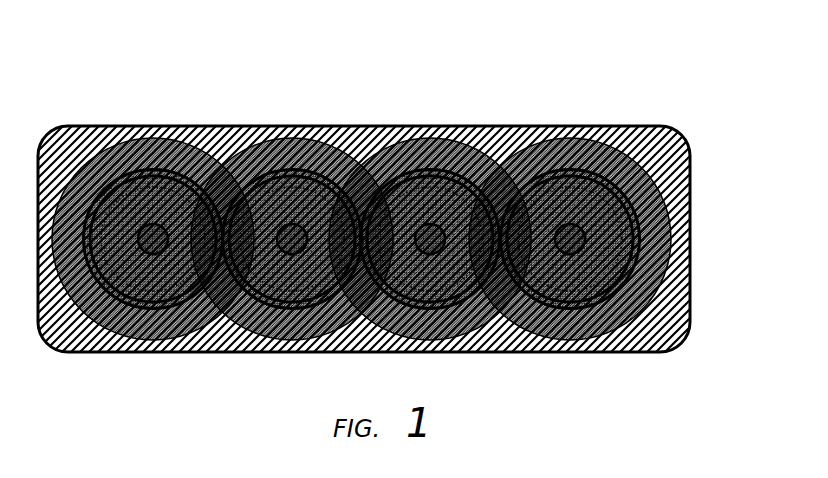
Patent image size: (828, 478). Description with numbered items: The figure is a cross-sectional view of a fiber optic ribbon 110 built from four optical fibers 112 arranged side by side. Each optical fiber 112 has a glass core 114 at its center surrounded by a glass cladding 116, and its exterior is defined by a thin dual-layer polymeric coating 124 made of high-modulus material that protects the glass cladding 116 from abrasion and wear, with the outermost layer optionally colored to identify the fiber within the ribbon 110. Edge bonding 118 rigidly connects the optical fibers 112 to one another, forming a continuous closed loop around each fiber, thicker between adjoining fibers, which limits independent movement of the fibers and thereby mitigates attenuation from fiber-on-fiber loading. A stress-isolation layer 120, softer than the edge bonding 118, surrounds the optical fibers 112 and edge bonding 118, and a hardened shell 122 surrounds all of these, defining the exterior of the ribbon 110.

The fiber optic ribbon 110 is at (391, 201).
The optical fiber 112 is at (225, 195).
The glass core 114 is at (305, 235).
The glass cladding 116 is at (325, 227).
The edge bonding 118 is at (502, 230).
The stress-isolation layer 120 is at (596, 156).
The hardened shell 122 is at (638, 143).
The polymeric coating 124 is at (100, 192).